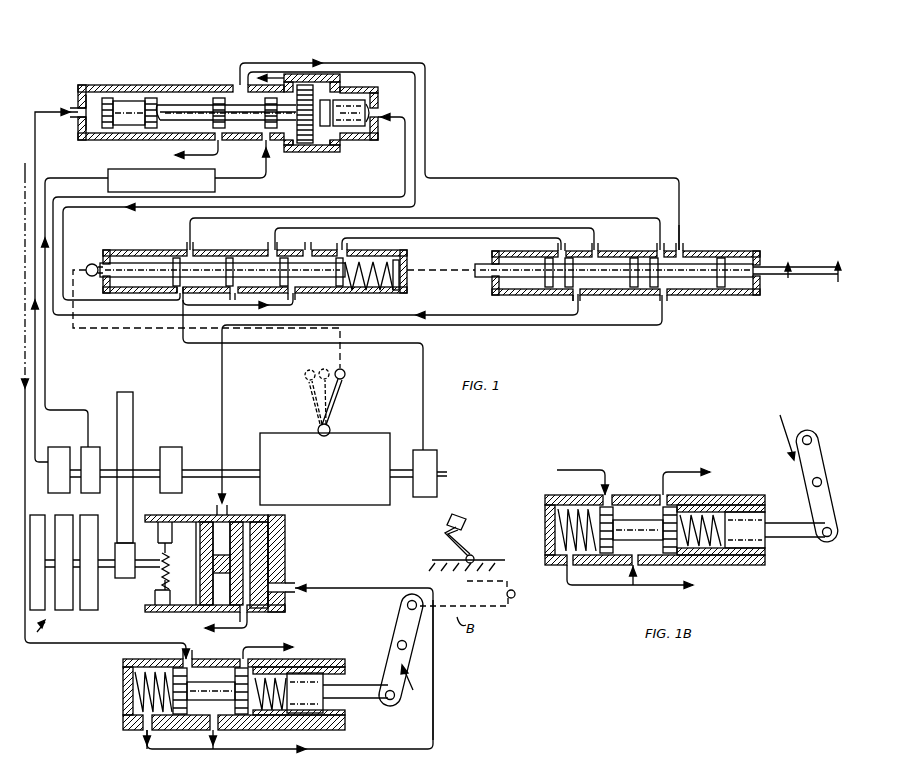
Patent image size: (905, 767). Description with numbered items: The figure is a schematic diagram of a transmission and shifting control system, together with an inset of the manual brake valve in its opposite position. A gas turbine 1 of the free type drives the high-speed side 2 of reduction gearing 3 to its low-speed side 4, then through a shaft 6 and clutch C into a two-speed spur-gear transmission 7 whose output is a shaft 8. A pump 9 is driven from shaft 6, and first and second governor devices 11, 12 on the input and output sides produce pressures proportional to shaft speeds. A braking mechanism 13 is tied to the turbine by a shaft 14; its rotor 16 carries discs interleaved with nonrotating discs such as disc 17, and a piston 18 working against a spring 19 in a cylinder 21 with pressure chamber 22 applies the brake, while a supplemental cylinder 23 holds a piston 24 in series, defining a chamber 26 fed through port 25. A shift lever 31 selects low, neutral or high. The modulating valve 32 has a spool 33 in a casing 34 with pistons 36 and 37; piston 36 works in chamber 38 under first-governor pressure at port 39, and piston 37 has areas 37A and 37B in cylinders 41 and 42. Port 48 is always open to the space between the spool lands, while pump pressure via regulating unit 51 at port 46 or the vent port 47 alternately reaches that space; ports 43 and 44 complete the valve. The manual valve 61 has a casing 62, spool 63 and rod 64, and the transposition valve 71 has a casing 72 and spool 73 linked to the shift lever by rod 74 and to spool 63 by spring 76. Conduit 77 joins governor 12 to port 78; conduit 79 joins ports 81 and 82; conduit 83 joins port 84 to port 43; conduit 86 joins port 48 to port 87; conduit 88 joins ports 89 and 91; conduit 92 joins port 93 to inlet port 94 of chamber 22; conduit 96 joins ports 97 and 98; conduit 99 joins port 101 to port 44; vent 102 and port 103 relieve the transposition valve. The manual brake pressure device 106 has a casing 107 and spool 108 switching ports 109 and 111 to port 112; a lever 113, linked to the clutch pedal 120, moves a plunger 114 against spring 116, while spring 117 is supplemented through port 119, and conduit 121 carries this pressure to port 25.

In FIG. 1, the gas turbine 1 is at (33, 650).
In FIG. 1, the high-speed side of reduction gearing 2 is at (120, 578).
In FIG. 1, the reduction gearing 3 is at (136, 565).
In FIG. 1, the low-speed side of reduction gearing 4 is at (117, 402).
In FIG. 1, the shaft 6 is at (155, 470).
In FIG. 1, the shiftable spur-gear transmission 7 is at (285, 433).
In FIG. 1, the output shaft 8 is at (404, 468).
In FIG. 1, the pump 9 is at (92, 448).
In FIG. 1, the first governor device 11 is at (60, 448).
In FIG. 1, the second governor device 12 is at (438, 458).
In FIG. 1, the braking mechanism 13 is at (290, 549).
In FIG. 1, the shaft 14 is at (148, 566).
In FIG. 1, the rotor 16 is at (160, 585).
In FIG. 1, the nonrotating disc 17 is at (178, 522).
In FIG. 1, the piston 18 is at (218, 605).
In FIG. 1, the spring 19 is at (172, 598).
In FIG. 1, the cylinder 21 is at (248, 620).
In FIG. 1, the pressure chamber 22 is at (240, 515).
In FIG. 1, the supplemental cylinder 23 is at (272, 518).
In FIG. 1, the piston 24 is at (272, 562).
In FIG. 1, the port 25 is at (290, 586).
In FIG. 1, the chamber 26 is at (285, 600).
In FIG. 1, the shift lever 31 is at (336, 395).
In FIG. 1, the modulating valve 32 is at (165, 85).
In FIG. 1, the valve spool 33 is at (216, 100).
In FIG. 1, the casing 34 is at (142, 84).
In FIG. 1, the piston 36 is at (118, 104).
In FIG. 1, the piston 37 is at (312, 84).
In FIG. 1, the piston area 37A is at (366, 102).
In FIG. 1, the piston area 37B is at (315, 152).
In FIG. 1, the chamber 38 is at (88, 96).
In FIG. 1, the port 39 is at (80, 120).
In FIG. 1, the cylinder 41 is at (370, 140).
In FIG. 1, the cylinder 42 is at (326, 152).
In FIG. 1, the port 43 is at (379, 128).
In FIG. 1, the port 44 is at (334, 76).
In FIG. 1, the port 46 is at (268, 146).
In FIG. 1, the vent port 47 is at (220, 142).
In FIG. 1, the port 48 is at (245, 80).
In FIG. 1, the pressure regulating unit 51 is at (147, 180).
In FIG. 1, the manual valve 61 is at (740, 250).
In FIG. 1, the casing 62 is at (618, 250).
In FIG. 1, the spool 63 is at (688, 286).
In FIG. 1, the manually operable rod 64 is at (836, 280).
In FIG. 1, the transposition valve 71 is at (222, 250).
In FIG. 1, the casing 72 is at (127, 250).
In FIG. 1, the spool 73 is at (150, 267).
In FIG. 1, the rod 74 is at (100, 266).
In FIG. 1, the spring 76 is at (372, 285).
In FIG. 1, the conduit 77 is at (425, 362).
In FIG. 1, the port 78 is at (180, 295).
In FIG. 1, the conduit 79 is at (527, 218).
In FIG. 1, the port 81 is at (190, 245).
In FIG. 1, the port 82 is at (660, 251).
In FIG. 1, the conduit 83 is at (636, 326).
In FIG. 1, the port 84 is at (660, 297).
In FIG. 1, the conduit 86 is at (314, 62).
In FIG. 1, the port 87 is at (300, 294).
In FIG. 1, the conduit 88 is at (455, 238).
In FIG. 1, the port 89 is at (320, 245).
In FIG. 1, the port 91 is at (560, 248).
In FIG. 1, the conduit 92 is at (575, 318).
In FIG. 1, the port 93 is at (575, 296).
In FIG. 1, the inlet port 94 is at (216, 505).
In FIG. 1, the conduit 96 is at (484, 228).
In FIG. 1, the port 97 is at (272, 248).
In FIG. 1, the port 98 is at (595, 248).
In FIG. 1, the conduit 99 is at (680, 222).
In FIG. 1, the port 101 is at (683, 250).
In FIG. 1, the vent 102 is at (232, 300).
In FIG. 1, the port 103 is at (345, 240).
In FIG. 1, the manually operable brake pressure device 106 is at (415, 690).
In FIG. 1B, the manually operable brake pressure device 106 is at (780, 415).
In FIG. 1, the valve casing 107 is at (318, 656).
In FIG. 1B, the valve casing 107 is at (736, 491).
In FIG. 1, the spool 108 is at (213, 688).
In FIG. 1B, the spool 108 is at (632, 524).
In FIG. 1, the port 109 is at (292, 644).
In FIG. 1B, the port 109 is at (670, 490).
In FIG. 1, the port 111 is at (182, 654).
In FIG. 1B, the port 111 is at (602, 488).
In FIG. 1, the port 112 is at (216, 733).
In FIG. 1B, the port 112 is at (640, 573).
In FIG. 1, the lever 113 is at (428, 640).
In FIG. 1B, the lever 113 is at (815, 462).
In FIG. 1, the plunger 114 is at (318, 720).
In FIG. 1B, the plunger 114 is at (765, 545).
In FIG. 1, the spring 116 is at (280, 712).
In FIG. 1B, the spring 116 is at (698, 545).
In FIG. 1, the spring 117 is at (130, 680).
In FIG. 1B, the spring 117 is at (556, 516).
In FIG. 1, the port 119 is at (150, 733).
In FIG. 1B, the port 119 is at (575, 572).
In FIG. 1, the clutch pedal 120 is at (473, 518).
In FIG. 1, the conduit 121 is at (435, 728).
In FIG. 1, the clutch C is at (172, 446).